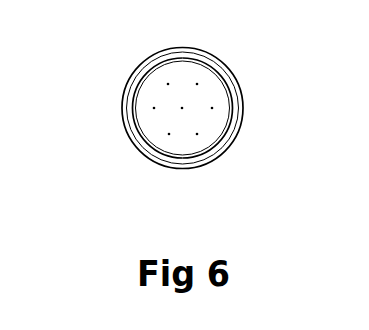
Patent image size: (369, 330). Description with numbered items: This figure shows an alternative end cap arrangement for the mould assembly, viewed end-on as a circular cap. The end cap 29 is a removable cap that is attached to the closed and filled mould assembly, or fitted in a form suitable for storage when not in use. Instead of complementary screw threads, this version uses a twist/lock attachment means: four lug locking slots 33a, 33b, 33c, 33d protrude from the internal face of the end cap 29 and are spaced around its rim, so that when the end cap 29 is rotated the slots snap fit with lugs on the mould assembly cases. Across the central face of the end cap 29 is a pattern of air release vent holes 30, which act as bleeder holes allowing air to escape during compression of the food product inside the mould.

The end cap 29 is at (203, 47).
The air release vent holes 30 is at (212, 108).
The lug locking slot 33a is at (222, 66).
The lug locking slot 33b is at (223, 150).
The lug locking slot 33c is at (138, 145).
The lug locking slot 33d is at (143, 73).